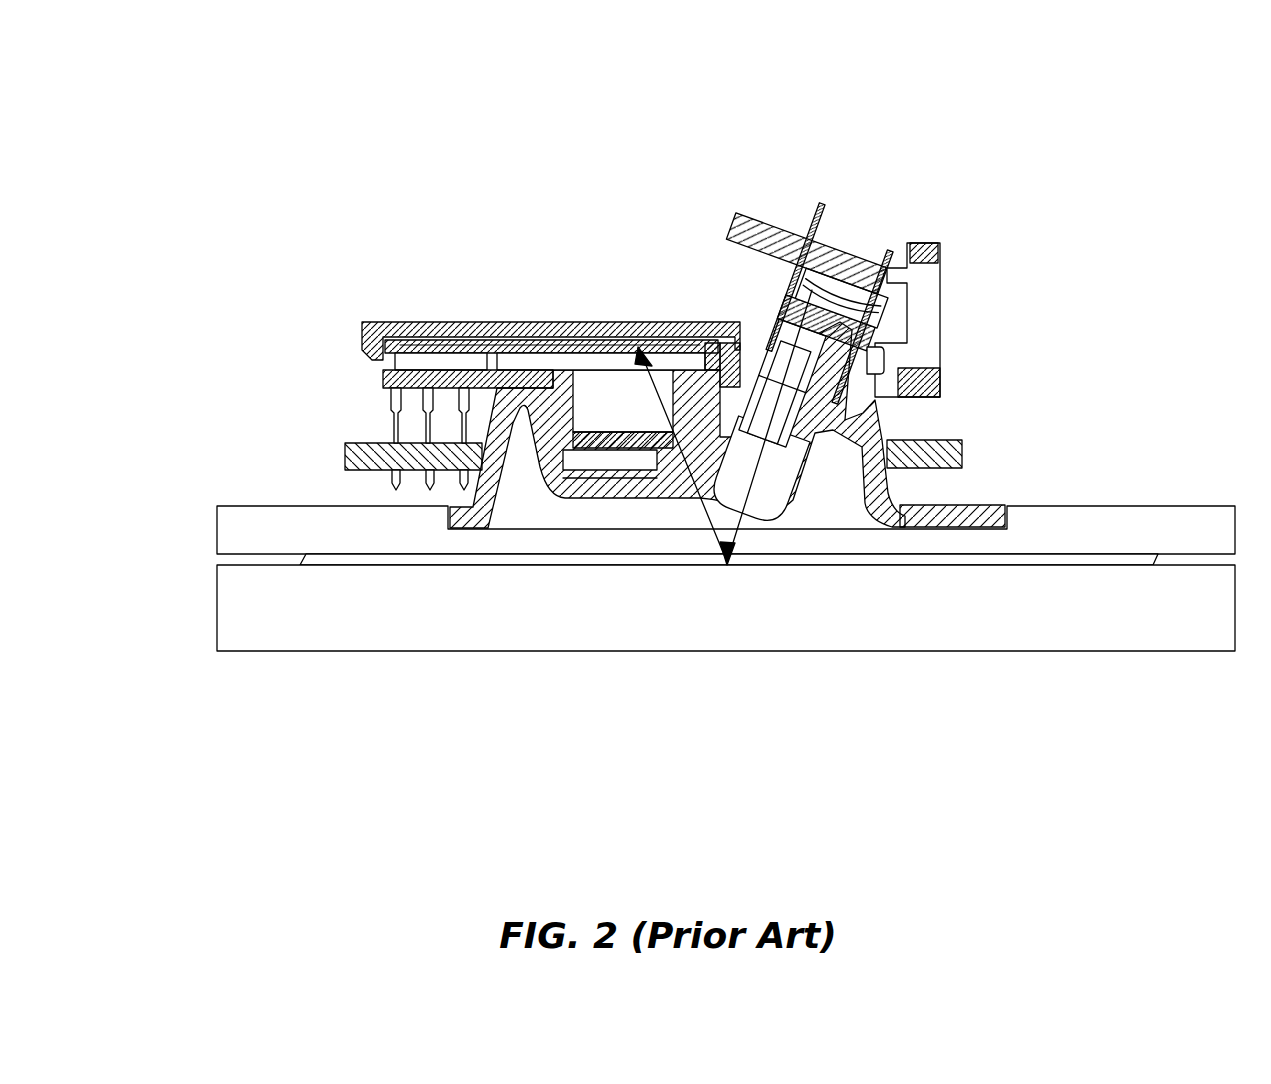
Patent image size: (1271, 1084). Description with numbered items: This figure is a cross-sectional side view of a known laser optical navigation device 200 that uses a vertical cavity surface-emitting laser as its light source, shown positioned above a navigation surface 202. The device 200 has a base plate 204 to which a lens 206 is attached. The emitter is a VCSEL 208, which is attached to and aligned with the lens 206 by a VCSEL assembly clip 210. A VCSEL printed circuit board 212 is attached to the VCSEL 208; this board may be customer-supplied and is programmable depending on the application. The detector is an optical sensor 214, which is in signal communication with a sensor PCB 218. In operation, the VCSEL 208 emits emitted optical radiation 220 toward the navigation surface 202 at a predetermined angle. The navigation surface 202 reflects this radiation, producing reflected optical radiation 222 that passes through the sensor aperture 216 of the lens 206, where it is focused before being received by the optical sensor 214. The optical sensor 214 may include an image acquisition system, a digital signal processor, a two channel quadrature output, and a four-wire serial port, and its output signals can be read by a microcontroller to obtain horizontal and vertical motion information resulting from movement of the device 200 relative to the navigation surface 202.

The laser optical navigation device 200 is at (858, 152).
The navigation surface 202 is at (1210, 633).
The base plate 204 is at (217, 528).
The lens 206 is at (1007, 520).
The VCSEL 208 is at (816, 206).
The VCSEL assembly clip 210 is at (942, 252).
The VCSEL printed circuit board 212 is at (730, 222).
The optical sensor 214 is at (403, 320).
The sensor aperture 216 is at (665, 428).
The sensor PCB 218 is at (360, 443).
The emitted optical radiation 220 is at (733, 543).
The reflected optical radiation 222 is at (718, 543).